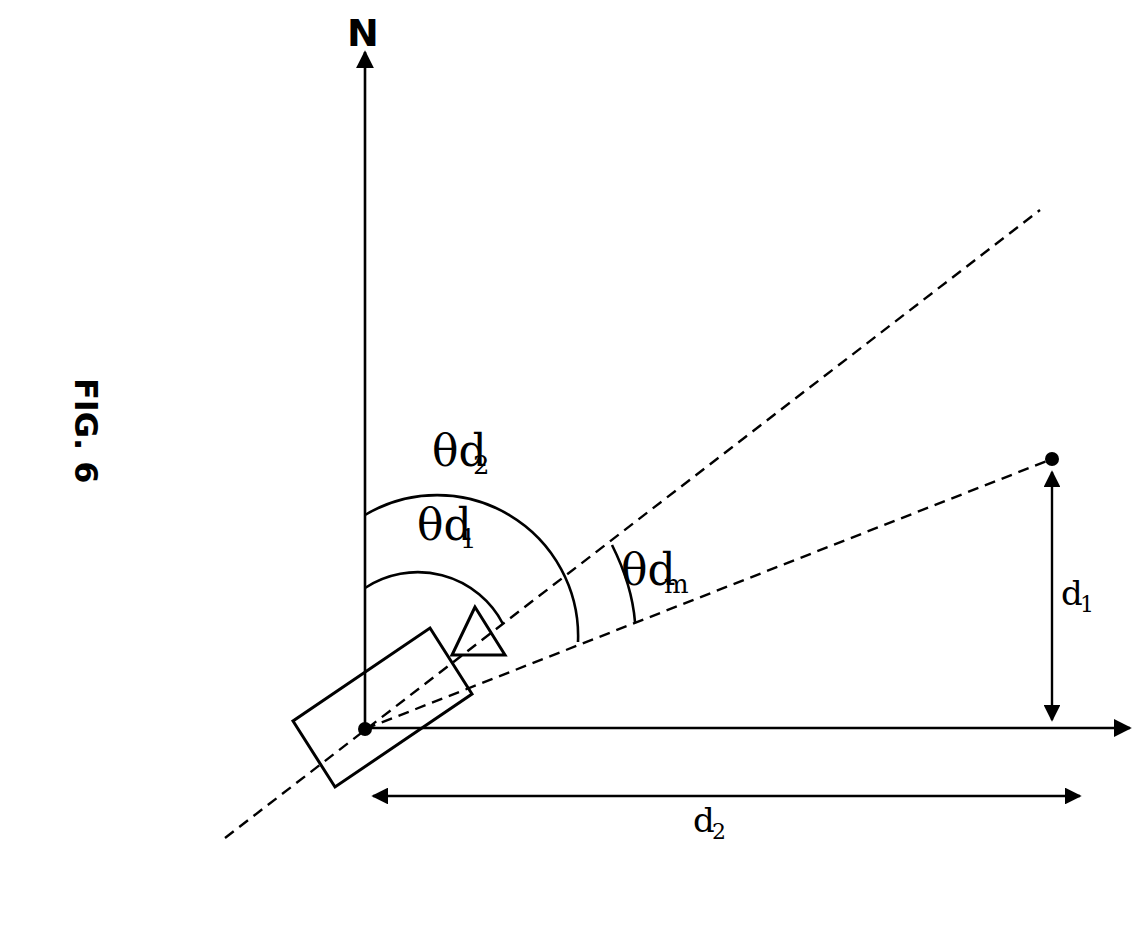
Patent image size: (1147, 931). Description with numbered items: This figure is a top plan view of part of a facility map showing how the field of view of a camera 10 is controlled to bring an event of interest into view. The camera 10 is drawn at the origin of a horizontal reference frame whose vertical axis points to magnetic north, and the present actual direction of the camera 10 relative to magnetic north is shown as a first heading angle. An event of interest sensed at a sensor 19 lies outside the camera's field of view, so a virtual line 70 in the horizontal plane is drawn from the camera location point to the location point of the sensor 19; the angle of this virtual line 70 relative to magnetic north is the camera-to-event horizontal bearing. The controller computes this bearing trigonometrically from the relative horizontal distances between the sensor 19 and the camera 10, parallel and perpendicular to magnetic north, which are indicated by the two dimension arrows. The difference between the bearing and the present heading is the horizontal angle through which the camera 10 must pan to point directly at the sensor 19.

The camera 10 is at (296, 722).
The sensor 19 is at (1086, 447).
The virtual line 70 is at (805, 558).